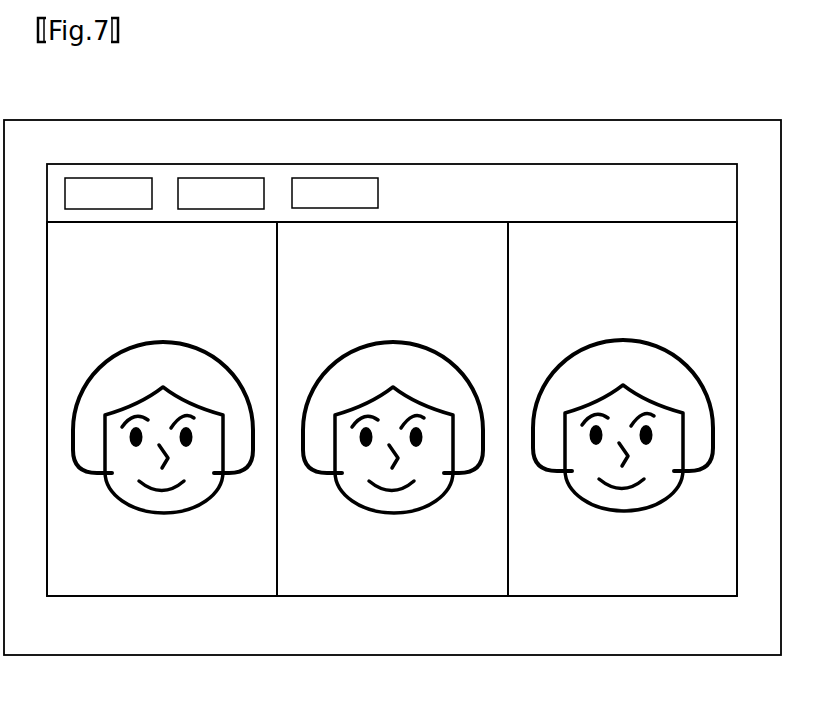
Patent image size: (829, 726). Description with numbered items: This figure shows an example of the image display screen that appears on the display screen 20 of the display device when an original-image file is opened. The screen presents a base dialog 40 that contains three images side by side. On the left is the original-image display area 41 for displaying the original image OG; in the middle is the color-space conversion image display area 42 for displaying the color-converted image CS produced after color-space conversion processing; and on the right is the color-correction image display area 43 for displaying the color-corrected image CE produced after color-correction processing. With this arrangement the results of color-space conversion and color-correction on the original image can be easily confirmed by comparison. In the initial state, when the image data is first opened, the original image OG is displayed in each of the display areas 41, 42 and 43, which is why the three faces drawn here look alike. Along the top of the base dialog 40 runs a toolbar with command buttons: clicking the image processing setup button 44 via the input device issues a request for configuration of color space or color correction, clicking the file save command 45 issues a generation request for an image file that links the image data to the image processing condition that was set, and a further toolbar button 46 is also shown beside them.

The display screen 20 is at (388, 656).
The base dialog 40 is at (700, 617).
The original-image display area 41 is at (107, 597).
The color-space conversion image display area 42 is at (375, 597).
The color-correction image display area 43 is at (580, 597).
The image processing setup button 44 is at (97, 193).
The file save command 45 is at (212, 195).
The operation button 46 is at (327, 195).
The original image OG is at (153, 340).
The color-converted image CS is at (385, 340).
The color-corrected image CE is at (612, 338).